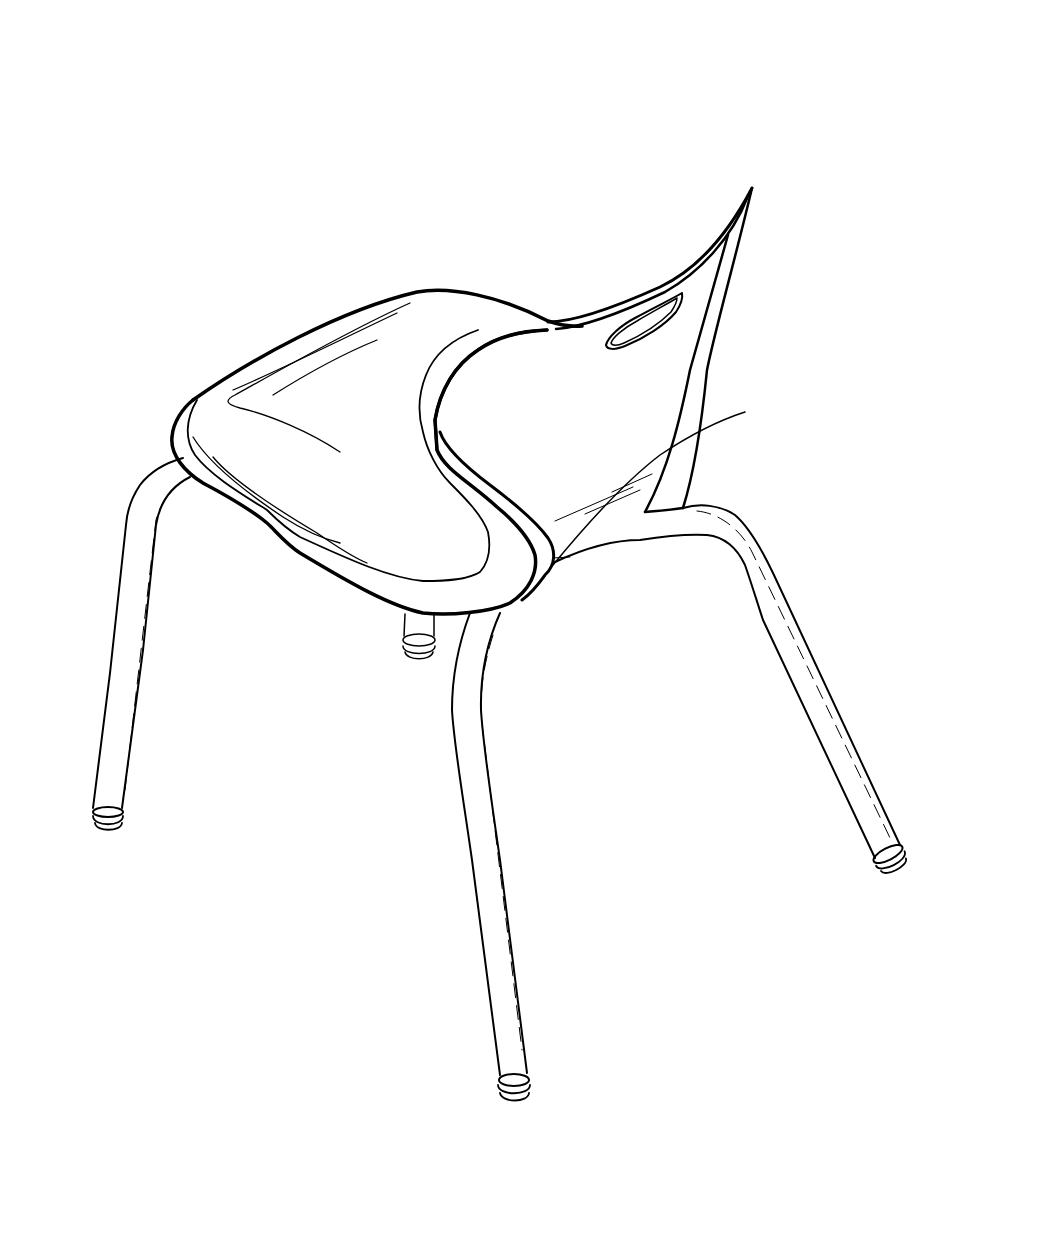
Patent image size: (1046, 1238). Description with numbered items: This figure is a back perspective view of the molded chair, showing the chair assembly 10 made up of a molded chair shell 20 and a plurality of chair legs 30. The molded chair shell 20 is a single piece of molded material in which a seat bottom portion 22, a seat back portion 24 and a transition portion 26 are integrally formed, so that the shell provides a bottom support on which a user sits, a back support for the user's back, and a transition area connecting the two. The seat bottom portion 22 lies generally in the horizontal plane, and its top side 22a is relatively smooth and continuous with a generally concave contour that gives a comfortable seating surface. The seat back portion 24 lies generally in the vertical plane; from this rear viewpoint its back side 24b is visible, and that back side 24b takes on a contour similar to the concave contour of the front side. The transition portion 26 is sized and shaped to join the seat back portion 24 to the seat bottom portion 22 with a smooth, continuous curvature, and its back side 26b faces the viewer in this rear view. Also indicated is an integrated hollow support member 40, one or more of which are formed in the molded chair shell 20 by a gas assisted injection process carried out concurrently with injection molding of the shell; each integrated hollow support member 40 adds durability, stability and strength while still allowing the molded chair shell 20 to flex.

The chair assembly 10 is at (350, 85).
The molded chair shell 20 is at (418, 258).
The seat bottom portion 22 is at (363, 393).
The top side 22a is at (227, 405).
The seat back portion 24 is at (647, 390).
The back side 24b is at (607, 393).
The transition portion 26 is at (745, 412).
The back side 26b is at (603, 500).
The chair legs 30 is at (480, 960).
The integrated hollow support member 40 is at (532, 604).